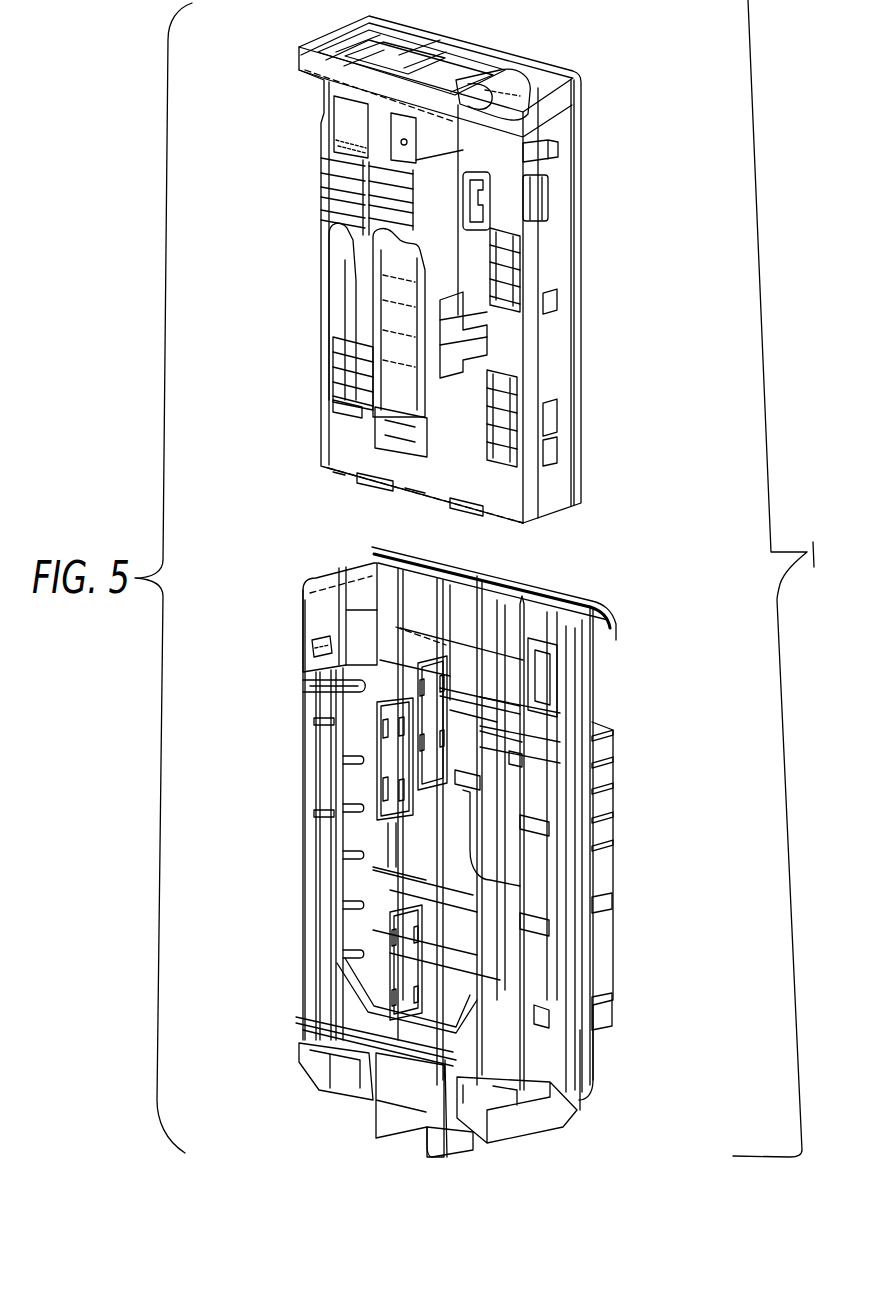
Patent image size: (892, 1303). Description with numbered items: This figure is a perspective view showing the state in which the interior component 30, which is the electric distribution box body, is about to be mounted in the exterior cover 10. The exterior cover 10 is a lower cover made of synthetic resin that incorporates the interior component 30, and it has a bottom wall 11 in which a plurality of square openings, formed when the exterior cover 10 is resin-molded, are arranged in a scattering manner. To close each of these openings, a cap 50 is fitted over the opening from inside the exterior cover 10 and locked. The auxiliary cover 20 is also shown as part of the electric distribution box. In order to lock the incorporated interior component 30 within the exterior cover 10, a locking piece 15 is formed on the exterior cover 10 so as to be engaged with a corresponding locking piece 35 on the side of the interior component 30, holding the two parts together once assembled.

The exterior cover 10 is at (568, 591).
The bottom wall 11 is at (538, 604).
The locking piece 15 is at (312, 645).
The auxiliary cover 20 is at (293, 943).
The interior component 30 is at (586, 89).
The locking piece 35 is at (558, 146).
The cap 50 is at (433, 766).